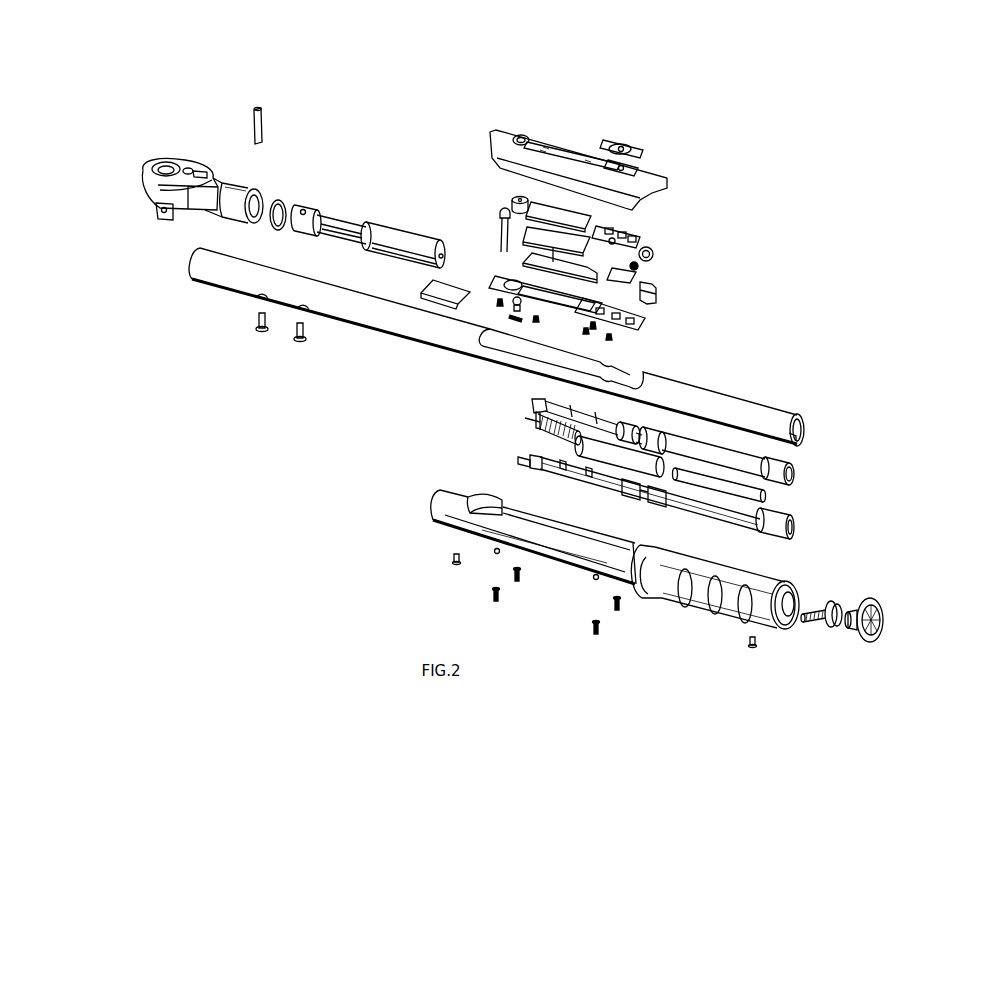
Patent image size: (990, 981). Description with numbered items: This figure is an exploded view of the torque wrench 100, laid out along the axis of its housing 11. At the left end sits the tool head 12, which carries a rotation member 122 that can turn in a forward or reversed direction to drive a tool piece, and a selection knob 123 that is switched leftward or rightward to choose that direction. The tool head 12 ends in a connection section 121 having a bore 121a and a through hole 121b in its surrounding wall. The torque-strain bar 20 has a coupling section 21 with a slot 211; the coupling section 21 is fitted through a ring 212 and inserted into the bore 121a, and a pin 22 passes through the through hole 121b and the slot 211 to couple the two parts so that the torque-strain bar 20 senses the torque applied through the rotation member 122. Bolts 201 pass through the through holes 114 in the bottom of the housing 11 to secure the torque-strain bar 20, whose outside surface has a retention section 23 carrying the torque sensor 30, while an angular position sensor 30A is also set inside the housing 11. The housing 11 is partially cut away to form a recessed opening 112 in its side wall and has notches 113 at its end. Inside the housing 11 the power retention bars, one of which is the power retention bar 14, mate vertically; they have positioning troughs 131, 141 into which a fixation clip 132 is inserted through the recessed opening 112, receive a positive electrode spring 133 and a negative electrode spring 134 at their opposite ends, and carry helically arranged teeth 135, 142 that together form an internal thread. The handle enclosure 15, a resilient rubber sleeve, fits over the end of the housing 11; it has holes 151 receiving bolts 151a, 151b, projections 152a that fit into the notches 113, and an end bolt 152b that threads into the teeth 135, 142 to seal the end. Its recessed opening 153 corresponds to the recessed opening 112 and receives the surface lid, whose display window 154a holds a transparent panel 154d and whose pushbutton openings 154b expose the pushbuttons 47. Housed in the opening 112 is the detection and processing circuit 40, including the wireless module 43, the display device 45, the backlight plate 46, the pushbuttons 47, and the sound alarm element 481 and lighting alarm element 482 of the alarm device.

The torque wrench 100 is at (910, 165).
The housing 11 is at (190, 278).
The recessed opening 112 is at (636, 382).
The notches 113 is at (805, 428).
The through holes 114 is at (256, 296).
The tool head 12 is at (165, 185).
The connection section 121 is at (228, 216).
The bore 121a is at (260, 204).
The through hole 121b is at (243, 188).
The rotation member 122 is at (156, 212).
The selection knob 123 is at (196, 168).
The positioning trough 131 is at (640, 422).
The fixation clip 132 is at (657, 292).
The positive electrode spring 133 is at (530, 428).
The negative electrode spring 134 is at (830, 606).
The helically arranged teeth 135 is at (796, 480).
The power retention bar 14 is at (692, 510).
The positioning trough 141 is at (628, 503).
The helically arranged teeth 142 is at (797, 522).
The handle enclosure 15 is at (750, 568).
The holes 151 is at (496, 554).
The bolt 151a is at (452, 559).
The bolt 151b is at (490, 598).
The projections 152a is at (792, 600).
The bolt 152b is at (882, 620).
The recessed opening 153 is at (530, 537).
The display window 154a is at (567, 155).
The pushbutton openings 154b is at (642, 172).
The transparent panel 154d is at (590, 213).
The torque-strain bar 20 is at (392, 235).
The bolts 201 is at (261, 334).
The coupling section 21 is at (296, 234).
The slot 211 is at (304, 209).
The ring 212 is at (272, 228).
The pin 22 is at (254, 122).
The retention section 23 is at (340, 220).
The torque sensor 30 is at (340, 238).
The angular position sensor 30A is at (425, 290).
The detection and processing circuit 40 is at (622, 312).
The bi-directional wireless receiving/transmitting module 43 is at (640, 272).
The display device 45 is at (583, 243).
The backlight plate 46 is at (536, 258).
The pushbuttons 47 is at (655, 254).
The sound alarm element 481 is at (513, 205).
The lighting alarm element 482 is at (500, 215).